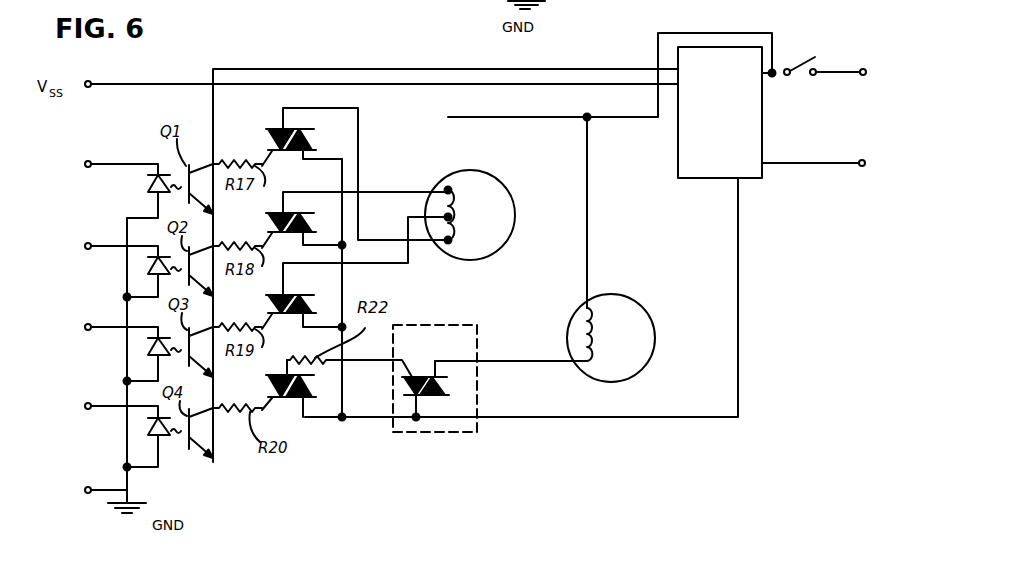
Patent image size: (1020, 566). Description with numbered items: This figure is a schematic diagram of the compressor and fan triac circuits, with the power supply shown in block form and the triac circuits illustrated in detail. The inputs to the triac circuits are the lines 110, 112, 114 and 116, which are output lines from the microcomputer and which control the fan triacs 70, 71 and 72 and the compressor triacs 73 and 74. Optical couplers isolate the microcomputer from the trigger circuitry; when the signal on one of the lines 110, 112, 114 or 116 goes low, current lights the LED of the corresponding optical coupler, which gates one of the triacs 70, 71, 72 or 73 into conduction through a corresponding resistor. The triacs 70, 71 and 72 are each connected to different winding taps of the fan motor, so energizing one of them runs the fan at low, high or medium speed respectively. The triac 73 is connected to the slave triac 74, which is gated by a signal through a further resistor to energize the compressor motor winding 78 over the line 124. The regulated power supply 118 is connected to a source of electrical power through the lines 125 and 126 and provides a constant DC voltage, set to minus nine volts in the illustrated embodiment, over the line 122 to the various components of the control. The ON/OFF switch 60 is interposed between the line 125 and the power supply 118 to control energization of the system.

The ON/OFF switch 60 is at (800, 68).
The fan triac 70 is at (270, 132).
The fan triac 71 is at (270, 217).
The fan triac 72 is at (270, 300).
The compressor triac 73 is at (270, 380).
The slave triac 74 is at (423, 372).
The compressor motor winding 78 is at (633, 322).
The input line 110 is at (85, 164).
The input line 112 is at (85, 246).
The input line 114 is at (85, 327).
The input line 116 is at (85, 406).
The regulated power supply 118 is at (726, 53).
The VSS line 122 is at (443, 82).
The compressor winding line 124 is at (523, 362).
The power source line 125 is at (842, 70).
The power source line 126 is at (810, 163).